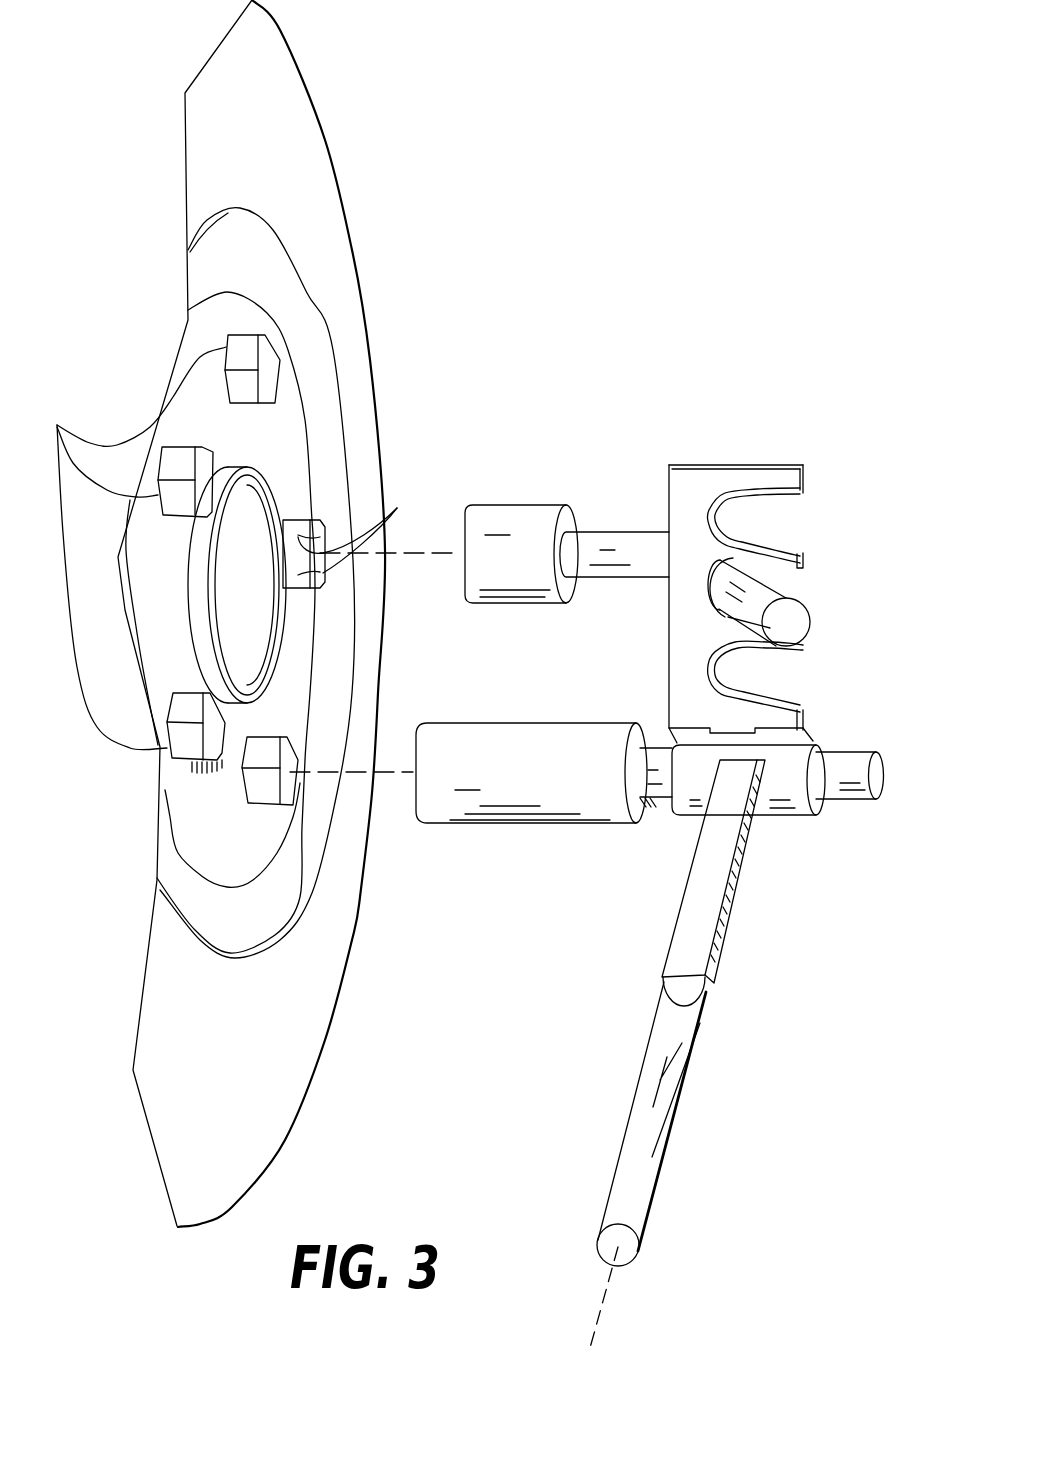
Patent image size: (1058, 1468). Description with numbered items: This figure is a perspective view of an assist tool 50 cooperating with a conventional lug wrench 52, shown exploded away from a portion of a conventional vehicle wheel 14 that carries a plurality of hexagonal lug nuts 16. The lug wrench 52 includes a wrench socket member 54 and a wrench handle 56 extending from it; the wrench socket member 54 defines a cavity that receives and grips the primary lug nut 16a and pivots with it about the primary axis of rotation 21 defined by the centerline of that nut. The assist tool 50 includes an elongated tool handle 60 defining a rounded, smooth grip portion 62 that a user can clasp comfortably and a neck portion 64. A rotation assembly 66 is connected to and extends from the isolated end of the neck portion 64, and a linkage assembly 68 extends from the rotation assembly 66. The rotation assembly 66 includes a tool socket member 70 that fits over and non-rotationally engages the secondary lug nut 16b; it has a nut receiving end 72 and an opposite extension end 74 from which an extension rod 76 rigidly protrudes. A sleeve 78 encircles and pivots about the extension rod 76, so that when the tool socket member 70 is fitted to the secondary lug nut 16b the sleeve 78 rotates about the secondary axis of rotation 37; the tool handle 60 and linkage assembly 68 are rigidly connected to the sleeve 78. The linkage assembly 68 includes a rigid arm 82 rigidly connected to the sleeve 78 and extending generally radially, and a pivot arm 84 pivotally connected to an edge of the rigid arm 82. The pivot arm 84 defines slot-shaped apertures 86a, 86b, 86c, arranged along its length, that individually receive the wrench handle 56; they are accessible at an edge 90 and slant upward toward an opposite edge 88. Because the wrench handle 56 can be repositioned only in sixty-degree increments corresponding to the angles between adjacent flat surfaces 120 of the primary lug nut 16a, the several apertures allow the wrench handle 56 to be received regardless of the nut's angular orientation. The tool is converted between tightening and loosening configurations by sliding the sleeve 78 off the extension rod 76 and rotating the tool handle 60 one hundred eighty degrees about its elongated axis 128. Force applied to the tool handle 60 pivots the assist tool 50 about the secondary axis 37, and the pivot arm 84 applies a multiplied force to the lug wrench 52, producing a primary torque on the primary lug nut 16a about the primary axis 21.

The vehicle wheel 14 is at (353, 150).
The lug nuts 16 is at (57, 426).
The primary lug nut 16a is at (288, 518).
The secondary lug nut 16b is at (242, 780).
The primary axis of rotation 21 is at (405, 553).
The secondary axis of rotation 37 is at (357, 773).
The assist tool 50 is at (689, 1054).
The lug wrench 52 is at (666, 532).
The wrench socket member 54 is at (527, 505).
The wrench handle 56 is at (648, 530).
The tool handle 60 is at (680, 1108).
The grip portion 62 is at (648, 1222).
The neck portion 64 is at (723, 967).
The rotation assembly 66 is at (680, 826).
The linkage assembly 68 is at (807, 712).
The tool socket member 70 is at (481, 795).
The nut receiving end 72 is at (417, 742).
The extension end 74 is at (647, 827).
The extension rod 76 is at (880, 773).
The sleeve 78 is at (790, 818).
The rigid arm 82 is at (803, 728).
The pivot arm 84 is at (732, 565).
The aperture 86a is at (798, 521).
The aperture 86b is at (797, 583).
The aperture 86c is at (750, 672).
The edge 88 is at (668, 655).
The opposite edge 90 is at (805, 478).
The flat surfaces 120 is at (397, 508).
The elongated axis 128 is at (607, 1287).